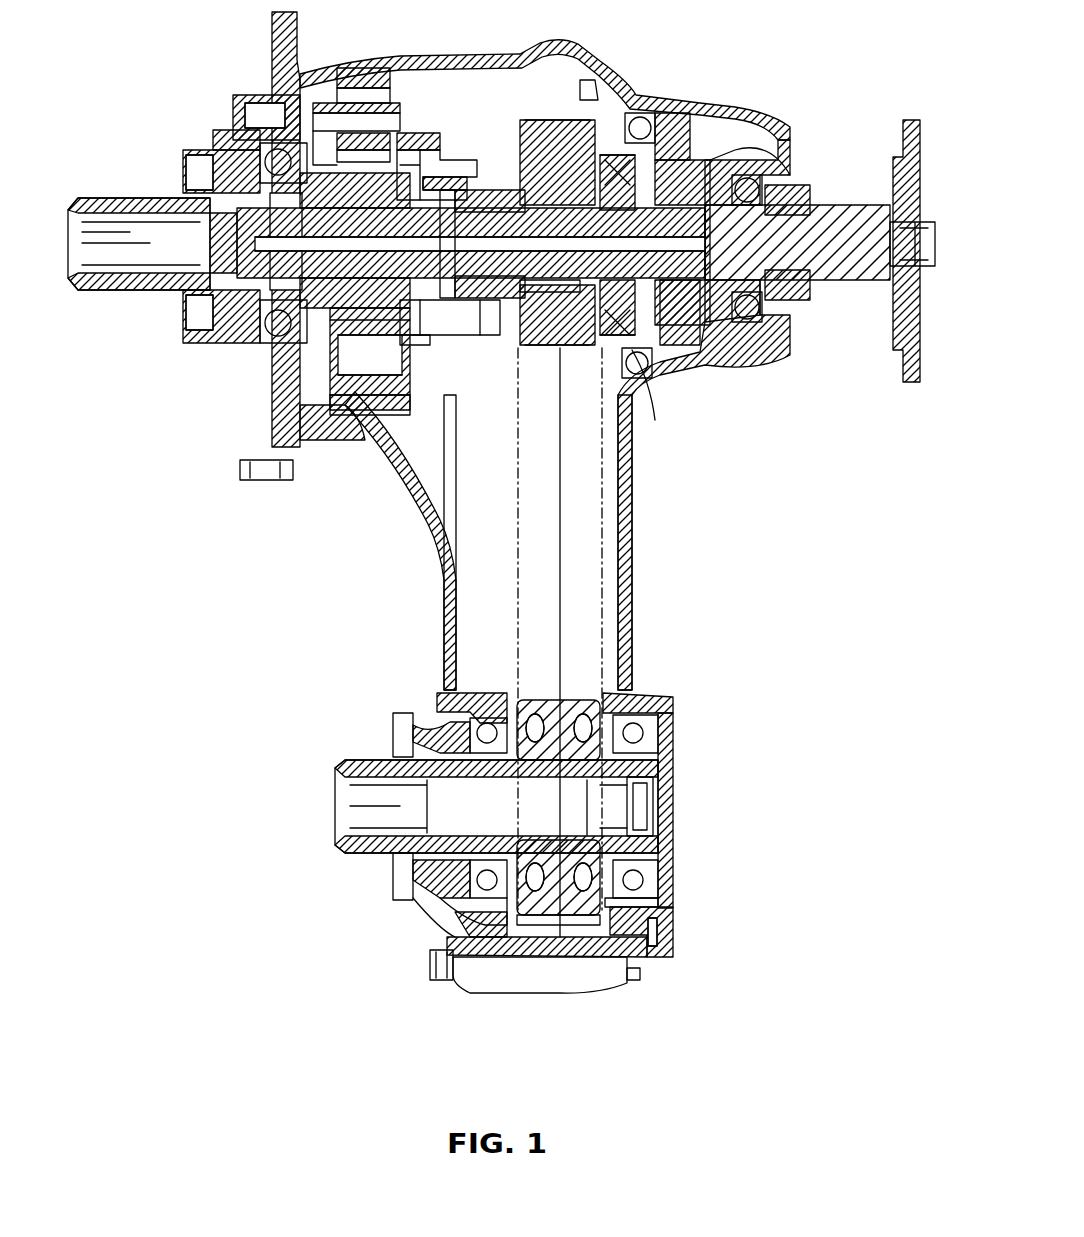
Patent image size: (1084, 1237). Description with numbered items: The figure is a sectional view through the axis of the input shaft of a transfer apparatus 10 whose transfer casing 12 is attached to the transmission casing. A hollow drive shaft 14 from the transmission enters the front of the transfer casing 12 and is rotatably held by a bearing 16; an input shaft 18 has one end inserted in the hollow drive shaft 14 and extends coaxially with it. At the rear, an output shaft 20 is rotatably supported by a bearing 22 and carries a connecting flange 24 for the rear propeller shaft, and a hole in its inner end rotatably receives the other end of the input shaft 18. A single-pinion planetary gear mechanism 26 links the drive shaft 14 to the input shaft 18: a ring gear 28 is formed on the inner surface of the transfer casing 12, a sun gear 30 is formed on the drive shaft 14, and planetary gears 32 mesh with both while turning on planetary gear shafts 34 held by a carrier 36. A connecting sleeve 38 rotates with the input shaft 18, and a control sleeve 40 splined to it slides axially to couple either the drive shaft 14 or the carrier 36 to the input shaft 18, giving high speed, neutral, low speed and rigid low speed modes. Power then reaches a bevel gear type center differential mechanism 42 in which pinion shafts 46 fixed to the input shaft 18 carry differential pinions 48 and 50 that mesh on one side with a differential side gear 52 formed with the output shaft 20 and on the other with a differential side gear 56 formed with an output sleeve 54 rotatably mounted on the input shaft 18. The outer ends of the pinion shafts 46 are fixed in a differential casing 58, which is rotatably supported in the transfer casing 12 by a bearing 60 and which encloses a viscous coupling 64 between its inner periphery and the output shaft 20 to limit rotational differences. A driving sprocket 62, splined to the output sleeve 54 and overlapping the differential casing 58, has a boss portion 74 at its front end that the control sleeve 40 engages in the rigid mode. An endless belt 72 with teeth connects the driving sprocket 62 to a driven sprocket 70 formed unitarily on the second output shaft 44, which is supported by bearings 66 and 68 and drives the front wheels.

The transfer apparatus 10 is at (736, 53).
The transfer casing 12 is at (468, 56).
The drive shaft 14 is at (165, 290).
The bearing 16 is at (272, 352).
The input shaft 18 is at (498, 300).
The output shaft 20 is at (828, 290).
The bearing 22 is at (742, 355).
The connecting flange 24 is at (898, 340).
The planetary gear mechanism 26 is at (385, 45).
The ring gear 28 is at (342, 440).
The sun gear 30 is at (405, 345).
The planetary gears 32 is at (398, 398).
The planetary gear shafts 34 is at (268, 412).
The carrier 36 is at (395, 140).
The connecting sleeve 38 is at (478, 160).
The control sleeve 40 is at (450, 330).
The center differential mechanism 42 is at (604, 360).
The output shaft 44 is at (362, 855).
The pinion shafts 46 is at (672, 380).
The differential pinion 48 is at (690, 160).
The differential pinion 50 is at (672, 352).
The differential side gear 52 is at (738, 180).
The output sleeve 54 is at (528, 350).
The differential side gear 56 is at (542, 352).
The differential casing 58 is at (612, 280).
The bearing 60 is at (640, 382).
The driving sprocket 62 is at (580, 180).
The viscous coupling 64 is at (710, 160).
The bearing 66 is at (485, 882).
The bearing 68 is at (660, 922).
The driven sprocket 70 is at (560, 720).
The endless belt 72 is at (632, 555).
The boss portion 74 is at (475, 300).